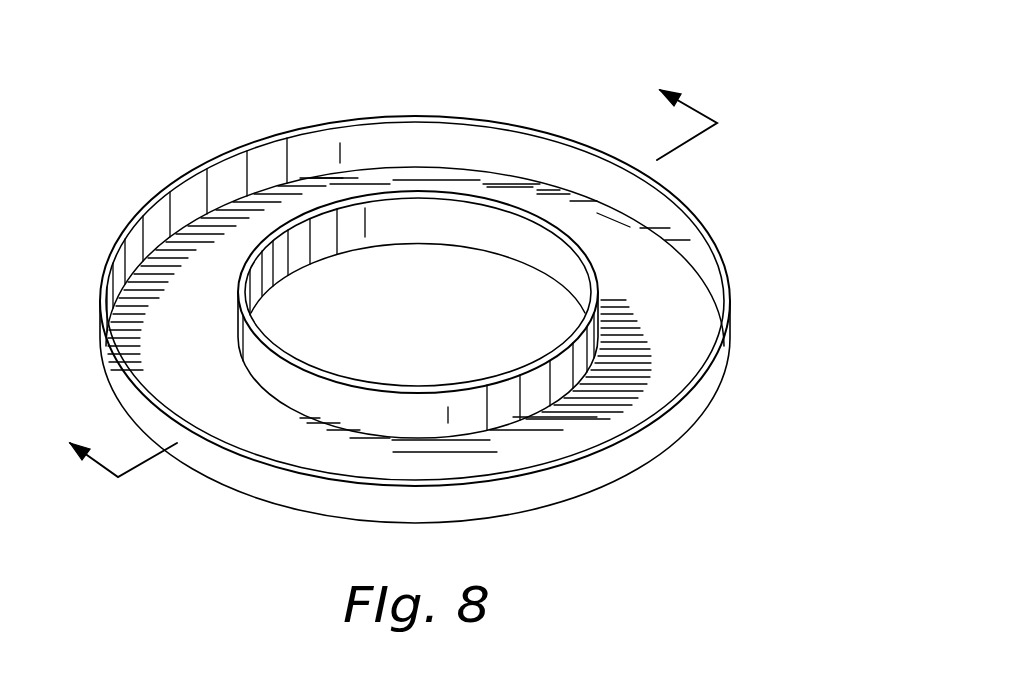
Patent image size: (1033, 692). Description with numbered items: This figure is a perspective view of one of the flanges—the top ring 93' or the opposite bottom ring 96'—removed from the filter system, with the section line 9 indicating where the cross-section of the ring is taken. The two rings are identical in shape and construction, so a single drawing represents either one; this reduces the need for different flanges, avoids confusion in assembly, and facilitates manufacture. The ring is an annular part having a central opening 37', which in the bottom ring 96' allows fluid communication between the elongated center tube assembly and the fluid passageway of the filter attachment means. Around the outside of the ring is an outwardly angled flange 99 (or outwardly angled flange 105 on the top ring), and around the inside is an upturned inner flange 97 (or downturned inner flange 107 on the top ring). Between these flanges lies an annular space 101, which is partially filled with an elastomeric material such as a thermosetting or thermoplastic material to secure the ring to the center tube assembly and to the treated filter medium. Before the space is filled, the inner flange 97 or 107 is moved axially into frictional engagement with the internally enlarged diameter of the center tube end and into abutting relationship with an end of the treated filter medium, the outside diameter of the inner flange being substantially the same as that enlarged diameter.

The outwardly angled flange 99 is at (472, 118).
The annular space 101 is at (247, 223).
The outwardly angled flange 105 is at (280, 483).
The upturned inner flange 97 is at (247, 352).
The downturned inner flange 107 is at (587, 335).
The central opening 37' is at (418, 278).
The top ring 93' is at (793, 198).
The bottom ring 96' is at (836, 258).
The section line 9- 9 is at (391, 279).